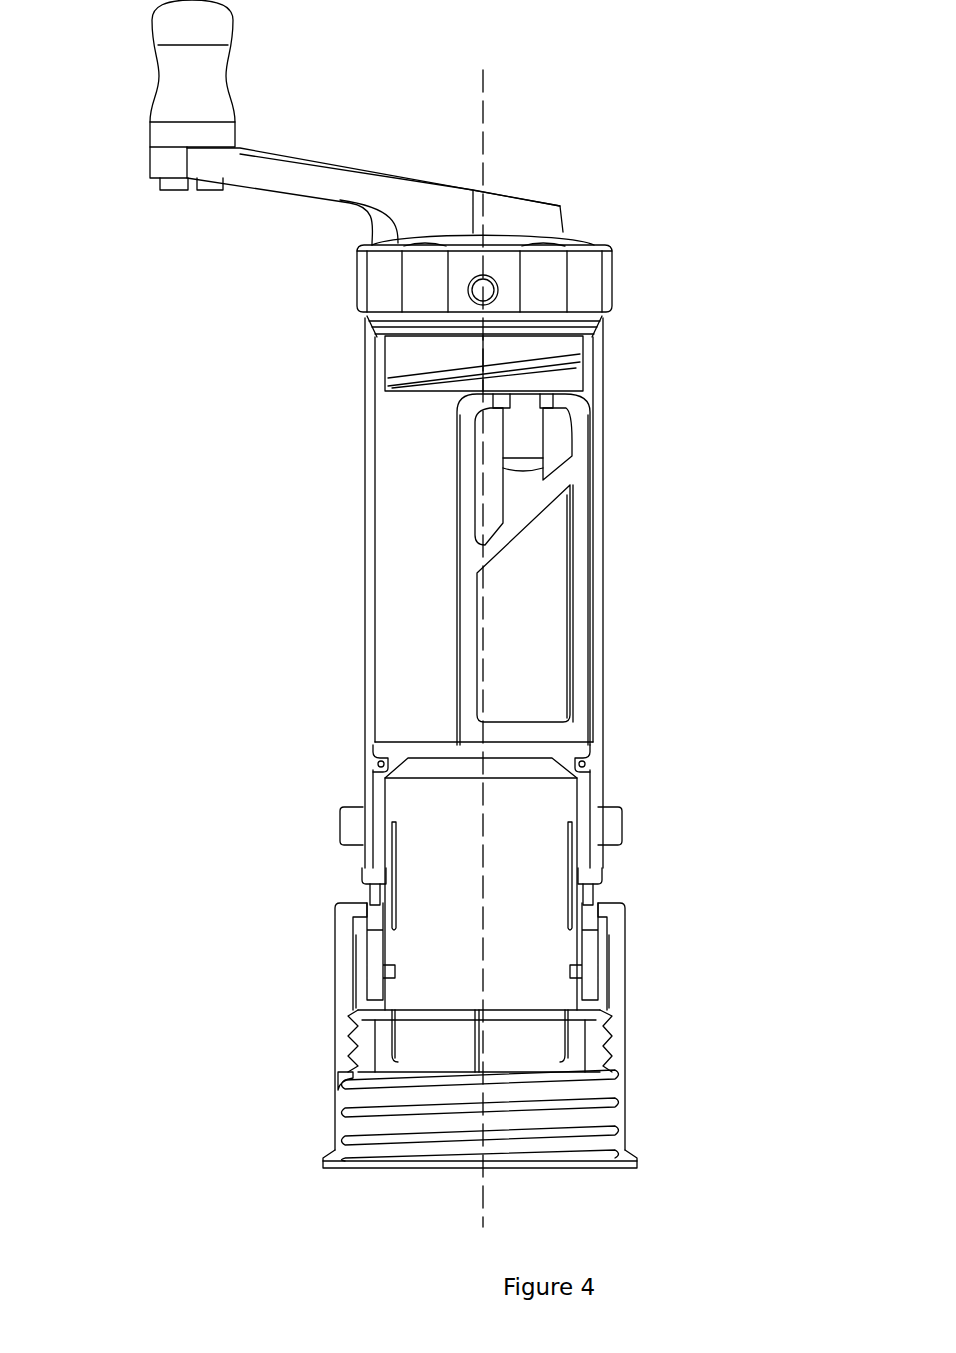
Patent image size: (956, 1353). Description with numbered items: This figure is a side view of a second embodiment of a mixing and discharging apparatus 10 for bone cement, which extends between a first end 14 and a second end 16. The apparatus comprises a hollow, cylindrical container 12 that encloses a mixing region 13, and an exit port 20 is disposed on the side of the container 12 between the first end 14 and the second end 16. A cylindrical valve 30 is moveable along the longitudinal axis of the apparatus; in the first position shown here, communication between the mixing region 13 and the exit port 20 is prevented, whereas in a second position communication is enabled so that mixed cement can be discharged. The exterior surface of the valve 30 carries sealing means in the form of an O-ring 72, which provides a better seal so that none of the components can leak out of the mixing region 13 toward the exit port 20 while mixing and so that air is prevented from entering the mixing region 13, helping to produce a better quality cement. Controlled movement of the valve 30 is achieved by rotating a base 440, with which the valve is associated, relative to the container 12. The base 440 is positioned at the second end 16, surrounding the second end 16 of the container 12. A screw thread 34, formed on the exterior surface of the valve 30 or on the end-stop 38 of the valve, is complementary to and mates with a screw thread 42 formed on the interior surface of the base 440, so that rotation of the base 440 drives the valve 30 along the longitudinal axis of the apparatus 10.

The apparatus 10 is at (755, 122).
The first end 14 is at (125, 292).
The container 12 is at (373, 497).
The mixing region 13 is at (408, 594).
The O-ring 72 is at (582, 760).
The exit port 20 is at (605, 828).
The valve 30 is at (447, 943).
The second end 16 is at (177, 1098).
The base 440 is at (617, 968).
The end-stop 38 is at (603, 1042).
The screw thread 42 is at (350, 1073).
The screw thread 34 is at (613, 1100).